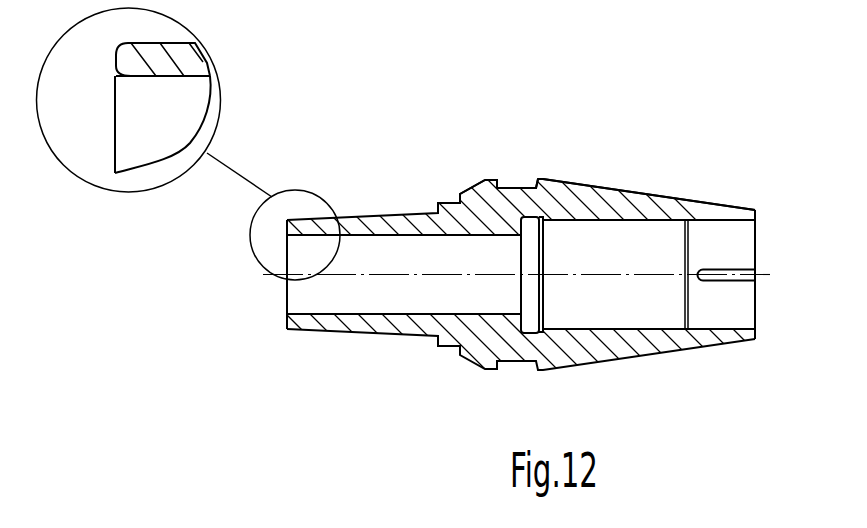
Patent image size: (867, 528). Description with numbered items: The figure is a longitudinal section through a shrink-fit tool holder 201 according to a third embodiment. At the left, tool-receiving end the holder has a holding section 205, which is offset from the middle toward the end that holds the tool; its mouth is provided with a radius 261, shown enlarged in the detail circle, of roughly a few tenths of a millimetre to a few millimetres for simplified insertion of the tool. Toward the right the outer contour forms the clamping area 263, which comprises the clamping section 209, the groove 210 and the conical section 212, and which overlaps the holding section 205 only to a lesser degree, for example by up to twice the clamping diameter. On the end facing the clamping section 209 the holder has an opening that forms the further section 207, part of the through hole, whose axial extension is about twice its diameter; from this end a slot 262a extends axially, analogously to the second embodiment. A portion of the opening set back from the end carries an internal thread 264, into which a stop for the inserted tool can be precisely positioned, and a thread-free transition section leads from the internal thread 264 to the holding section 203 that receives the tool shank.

The shrink-fit tool holder 201 is at (660, 184).
The holding section 203 is at (403, 235).
The holding section 205 is at (520, 428).
The further section 207 is at (755, 345).
The clamping section 209 is at (687, 197).
The groove 210 is at (520, 187).
The conical section 212 is at (463, 197).
The radius 261 is at (110, 77).
The slot 262a is at (745, 276).
The clamping area 263 is at (756, 205).
The internal thread 264 is at (630, 223).